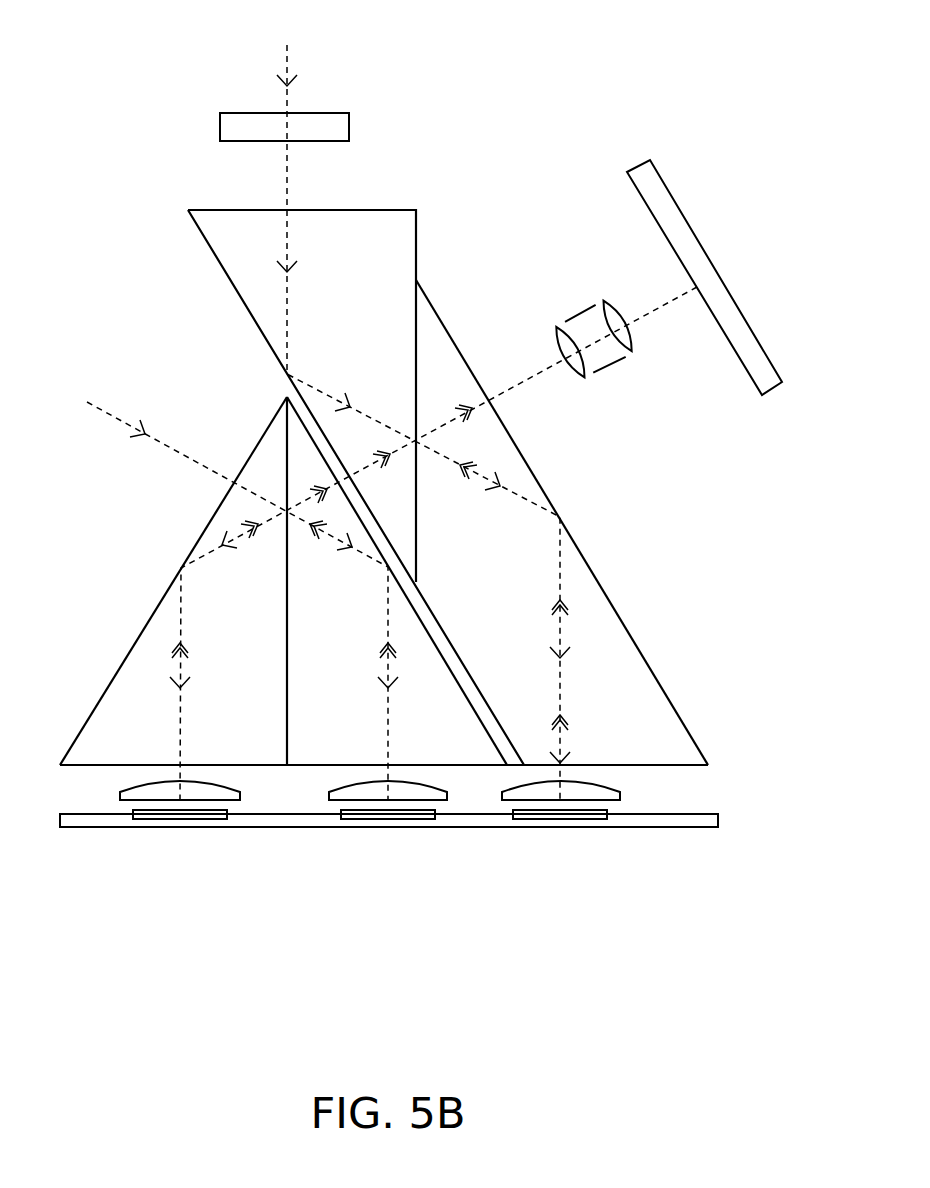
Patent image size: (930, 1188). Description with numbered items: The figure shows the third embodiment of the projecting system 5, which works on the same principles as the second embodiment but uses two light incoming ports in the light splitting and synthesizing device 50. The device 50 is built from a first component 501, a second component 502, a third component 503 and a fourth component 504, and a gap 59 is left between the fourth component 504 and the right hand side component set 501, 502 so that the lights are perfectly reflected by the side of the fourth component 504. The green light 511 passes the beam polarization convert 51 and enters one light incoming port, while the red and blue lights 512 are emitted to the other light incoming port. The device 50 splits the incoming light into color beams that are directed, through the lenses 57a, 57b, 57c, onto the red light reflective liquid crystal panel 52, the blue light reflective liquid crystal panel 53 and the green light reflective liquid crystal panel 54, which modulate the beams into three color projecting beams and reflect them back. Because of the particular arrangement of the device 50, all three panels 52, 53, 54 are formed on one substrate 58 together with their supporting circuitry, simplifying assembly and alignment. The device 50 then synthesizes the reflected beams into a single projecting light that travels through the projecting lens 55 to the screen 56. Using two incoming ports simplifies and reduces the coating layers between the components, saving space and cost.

The optical system 5 is at (183, 297).
The light splitting and synthesizing device 50 is at (665, 692).
The first component 501 is at (375, 230).
The second component 502 is at (614, 637).
The third component 503 is at (128, 705).
The fourth component 504 is at (325, 636).
The gap 59 is at (288, 387).
The beam polarization convert 51 is at (335, 123).
The green light 511 is at (282, 62).
The second light beam 512 is at (97, 405).
The projecting lens 55 is at (580, 323).
The screen 56 is at (742, 327).
The condenser lens 57a is at (158, 793).
The condenser lens 57b is at (368, 795).
The condenser lens 57c is at (588, 795).
The red light reflective liquid crystal panel 52 is at (200, 820).
The blue light reflective liquid crystal panel 53 is at (415, 815).
The green light reflective liquid crystal panel 54 is at (602, 815).
The substrate 58 is at (703, 820).